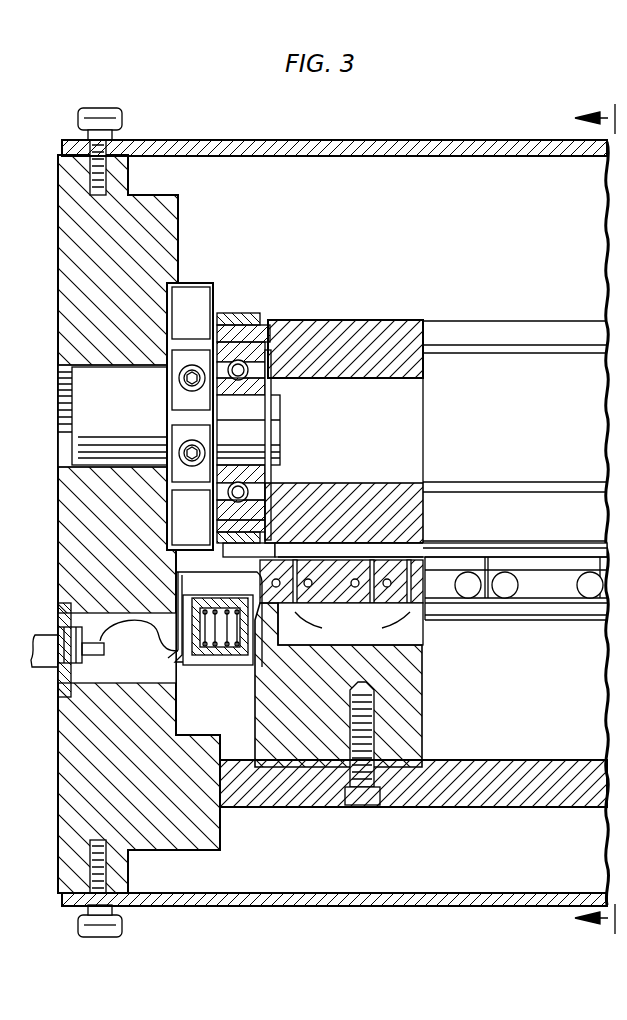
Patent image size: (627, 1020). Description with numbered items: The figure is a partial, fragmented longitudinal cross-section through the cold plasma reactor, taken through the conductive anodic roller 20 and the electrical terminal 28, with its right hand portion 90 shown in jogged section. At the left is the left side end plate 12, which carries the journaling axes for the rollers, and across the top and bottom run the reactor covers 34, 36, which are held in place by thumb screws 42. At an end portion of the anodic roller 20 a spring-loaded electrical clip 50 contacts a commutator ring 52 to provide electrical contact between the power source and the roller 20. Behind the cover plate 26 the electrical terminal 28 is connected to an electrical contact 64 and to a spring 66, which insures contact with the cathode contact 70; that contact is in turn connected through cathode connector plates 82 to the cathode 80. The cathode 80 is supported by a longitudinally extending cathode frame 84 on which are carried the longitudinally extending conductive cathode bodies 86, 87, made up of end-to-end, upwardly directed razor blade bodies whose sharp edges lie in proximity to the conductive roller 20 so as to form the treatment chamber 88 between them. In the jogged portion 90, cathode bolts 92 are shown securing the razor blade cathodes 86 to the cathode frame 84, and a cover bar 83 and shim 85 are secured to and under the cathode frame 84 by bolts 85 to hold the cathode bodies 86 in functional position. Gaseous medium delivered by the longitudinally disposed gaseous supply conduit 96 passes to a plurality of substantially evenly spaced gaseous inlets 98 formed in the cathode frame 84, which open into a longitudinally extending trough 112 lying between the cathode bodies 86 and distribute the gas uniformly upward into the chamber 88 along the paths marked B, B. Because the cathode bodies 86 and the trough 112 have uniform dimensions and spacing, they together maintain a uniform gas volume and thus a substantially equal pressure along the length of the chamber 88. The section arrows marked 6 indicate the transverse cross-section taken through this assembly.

The left side end plate 12 is at (58, 150).
The thumb screws 42 is at (100, 110).
The reactor cover 34 is at (470, 150).
The reactor cover 36 is at (475, 905).
The section line 6- 6 is at (595, 521).
The conductive roller 20 is at (332, 320).
The jogged right hand portion 90 is at (518, 296).
The commutator ring 52 is at (230, 312).
The spring-loaded electrical clip 50 is at (248, 322).
The cathode contact 70 is at (200, 548).
The cover plate 26 is at (58, 612).
The electrical terminal 28 is at (44, 665).
The electrical contact 64 is at (176, 592).
The spring 66 is at (246, 678).
The treatment chamber 88 is at (300, 528).
The trough 112 is at (336, 552).
The cathode 80 is at (314, 552).
The conductive cathode bodies 86 is at (362, 600).
The gaseous inlets 98 is at (403, 548).
The conductive cathode body 87 is at (438, 553).
The cathode connector plates 82 is at (530, 585).
The cathode bolts 92 is at (580, 582).
The gaseous supply conduit 96 is at (362, 640).
The cathode frame 84 is at (306, 720).
The shim 85 is at (310, 770).
The cover bar 83 is at (440, 790).